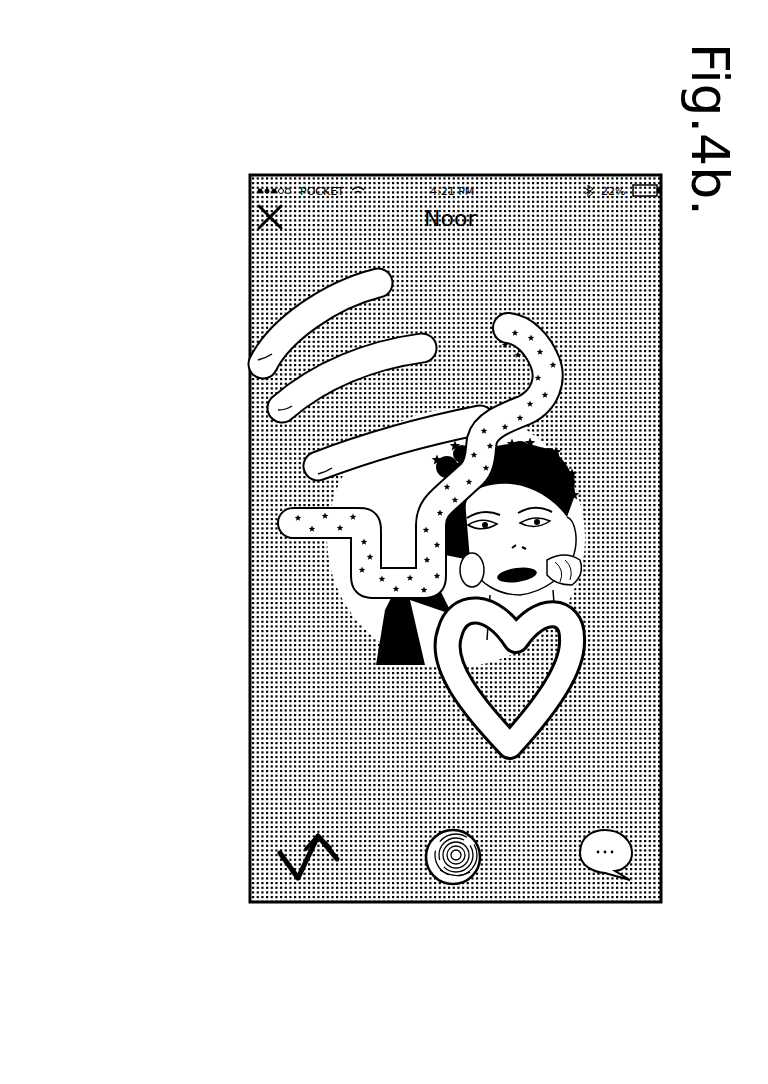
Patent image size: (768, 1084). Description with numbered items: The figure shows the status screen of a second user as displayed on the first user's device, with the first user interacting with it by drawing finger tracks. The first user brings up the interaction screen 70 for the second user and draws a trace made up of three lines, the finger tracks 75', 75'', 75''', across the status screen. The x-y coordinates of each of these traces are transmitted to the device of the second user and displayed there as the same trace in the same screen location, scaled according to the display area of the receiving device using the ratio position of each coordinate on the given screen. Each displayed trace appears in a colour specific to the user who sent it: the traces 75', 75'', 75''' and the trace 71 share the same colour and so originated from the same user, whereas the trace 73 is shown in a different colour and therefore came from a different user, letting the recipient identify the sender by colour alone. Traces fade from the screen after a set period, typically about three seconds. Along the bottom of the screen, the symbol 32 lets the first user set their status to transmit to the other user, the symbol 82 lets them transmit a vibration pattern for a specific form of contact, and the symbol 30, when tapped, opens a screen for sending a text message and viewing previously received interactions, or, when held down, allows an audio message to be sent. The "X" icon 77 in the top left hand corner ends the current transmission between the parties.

The interaction screen 70 is at (648, 365).
The trace 71 is at (578, 622).
The trace 73 is at (327, 537).
The finger track 75' is at (234, 339).
The finger track 75'' is at (260, 399).
The finger track 75''' is at (316, 465).
The "X" icon 77 is at (255, 208).
The symbol 32 is at (318, 850).
The symbol 82 is at (477, 857).
The symbol 30 is at (630, 867).